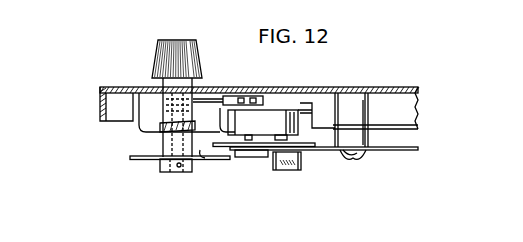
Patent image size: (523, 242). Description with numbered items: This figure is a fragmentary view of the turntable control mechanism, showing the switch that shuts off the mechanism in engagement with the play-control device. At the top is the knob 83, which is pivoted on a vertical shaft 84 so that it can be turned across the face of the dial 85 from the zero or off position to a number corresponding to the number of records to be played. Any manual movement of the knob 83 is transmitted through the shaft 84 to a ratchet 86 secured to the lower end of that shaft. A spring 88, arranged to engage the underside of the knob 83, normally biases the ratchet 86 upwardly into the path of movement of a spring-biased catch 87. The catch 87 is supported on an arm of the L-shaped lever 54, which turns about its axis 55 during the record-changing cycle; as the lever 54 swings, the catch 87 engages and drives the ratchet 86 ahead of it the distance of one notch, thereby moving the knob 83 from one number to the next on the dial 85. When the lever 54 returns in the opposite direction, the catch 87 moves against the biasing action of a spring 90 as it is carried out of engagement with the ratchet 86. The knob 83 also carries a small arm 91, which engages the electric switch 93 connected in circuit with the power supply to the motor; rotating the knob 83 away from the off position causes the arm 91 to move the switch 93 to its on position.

The L-shaped lever 54 is at (407, 152).
The pivot axis 55 is at (363, 152).
The knob 83 is at (158, 60).
The vertical shaft 84 is at (203, 160).
The dial 85 is at (122, 86).
The ratchet 86 is at (137, 158).
The spring-biased catch 87 is at (240, 158).
The spring 88 is at (160, 131).
The spring 90 is at (290, 172).
The arm 91 is at (212, 98).
The electric switch 93 is at (268, 118).